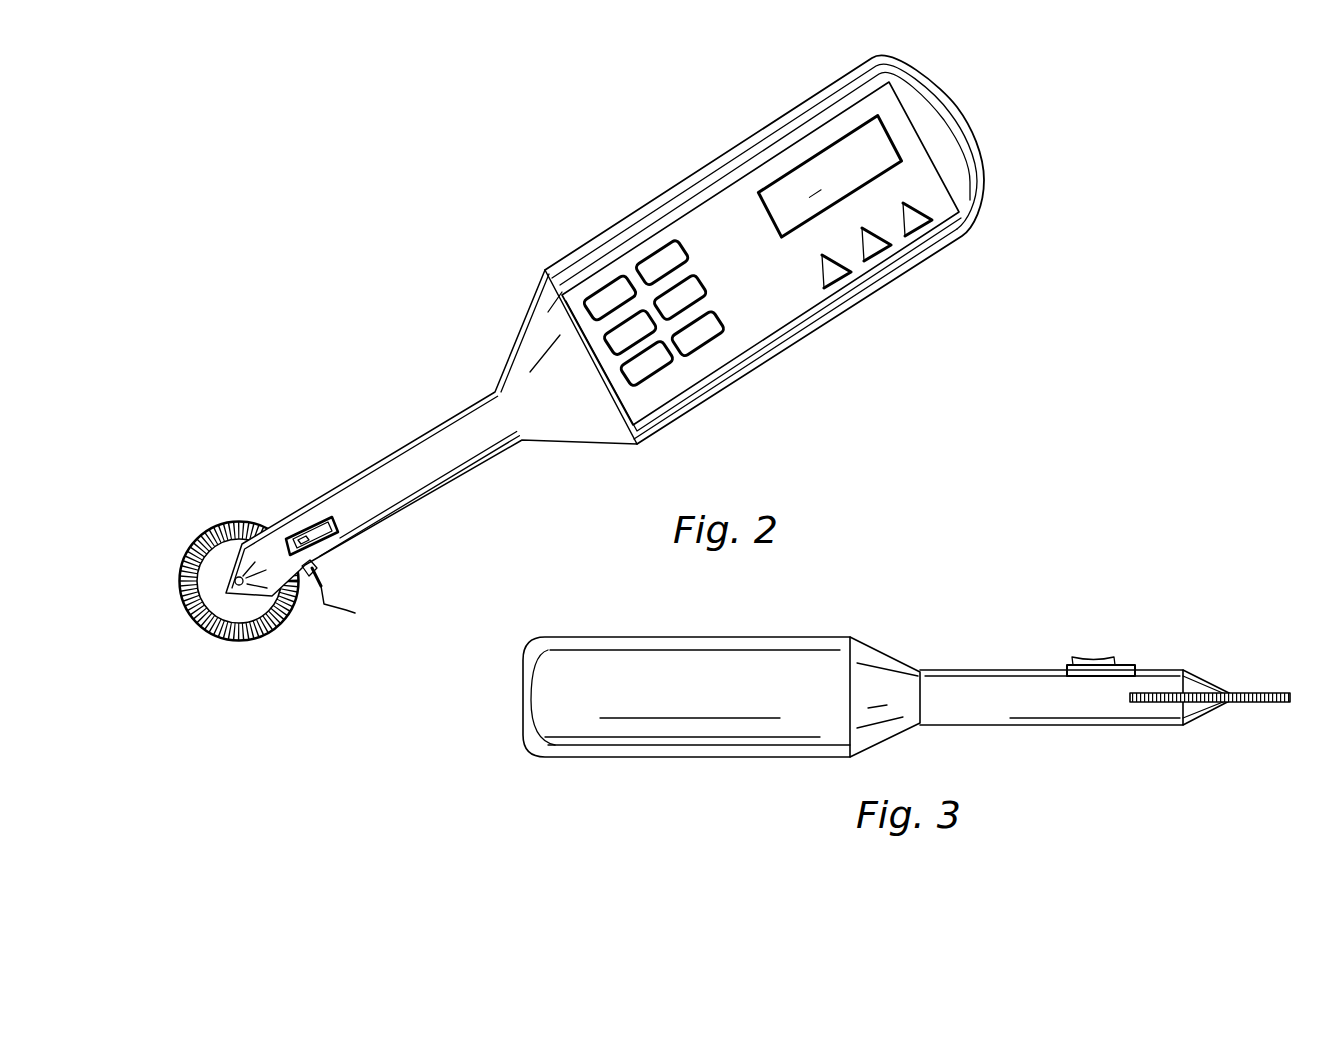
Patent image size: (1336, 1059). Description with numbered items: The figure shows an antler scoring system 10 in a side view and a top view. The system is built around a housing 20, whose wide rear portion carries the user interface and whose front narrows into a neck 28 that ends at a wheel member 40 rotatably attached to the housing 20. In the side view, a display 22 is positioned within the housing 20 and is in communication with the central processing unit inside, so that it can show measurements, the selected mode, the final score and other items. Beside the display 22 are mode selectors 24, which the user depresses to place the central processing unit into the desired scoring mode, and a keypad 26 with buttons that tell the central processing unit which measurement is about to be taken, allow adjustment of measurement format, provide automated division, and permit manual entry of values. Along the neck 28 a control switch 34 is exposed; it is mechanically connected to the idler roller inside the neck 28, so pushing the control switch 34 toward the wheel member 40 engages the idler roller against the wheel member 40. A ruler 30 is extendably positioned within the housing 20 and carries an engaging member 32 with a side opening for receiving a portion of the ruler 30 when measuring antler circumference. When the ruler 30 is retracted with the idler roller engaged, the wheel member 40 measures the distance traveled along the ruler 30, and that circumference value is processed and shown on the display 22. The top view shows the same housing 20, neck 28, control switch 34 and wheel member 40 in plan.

In FIG. 2, the antler scoring system 10 is at (398, 271).
In FIG. 3, the antler scoring system 10 is at (962, 613).
In FIG. 2, the housing 20 is at (698, 180).
In FIG. 3, the housing 20 is at (676, 701).
In FIG. 2, the display 22 is at (833, 137).
In FIG. 2, the mode selectors 24 is at (921, 250).
In FIG. 2, the keypad 26 is at (640, 257).
In FIG. 2, the neck 28 is at (396, 474).
In FIG. 3, the neck 28 is at (1016, 708).
In FIG. 2, the ruler 30 is at (330, 576).
In FIG. 2, the engaging member 32 is at (347, 617).
In FIG. 2, the control switch 34 is at (308, 520).
In FIG. 3, the control switch 34 is at (1103, 656).
In FIG. 2, the wheel member 40 is at (224, 553).
In FIG. 3, the wheel member 40 is at (1268, 690).